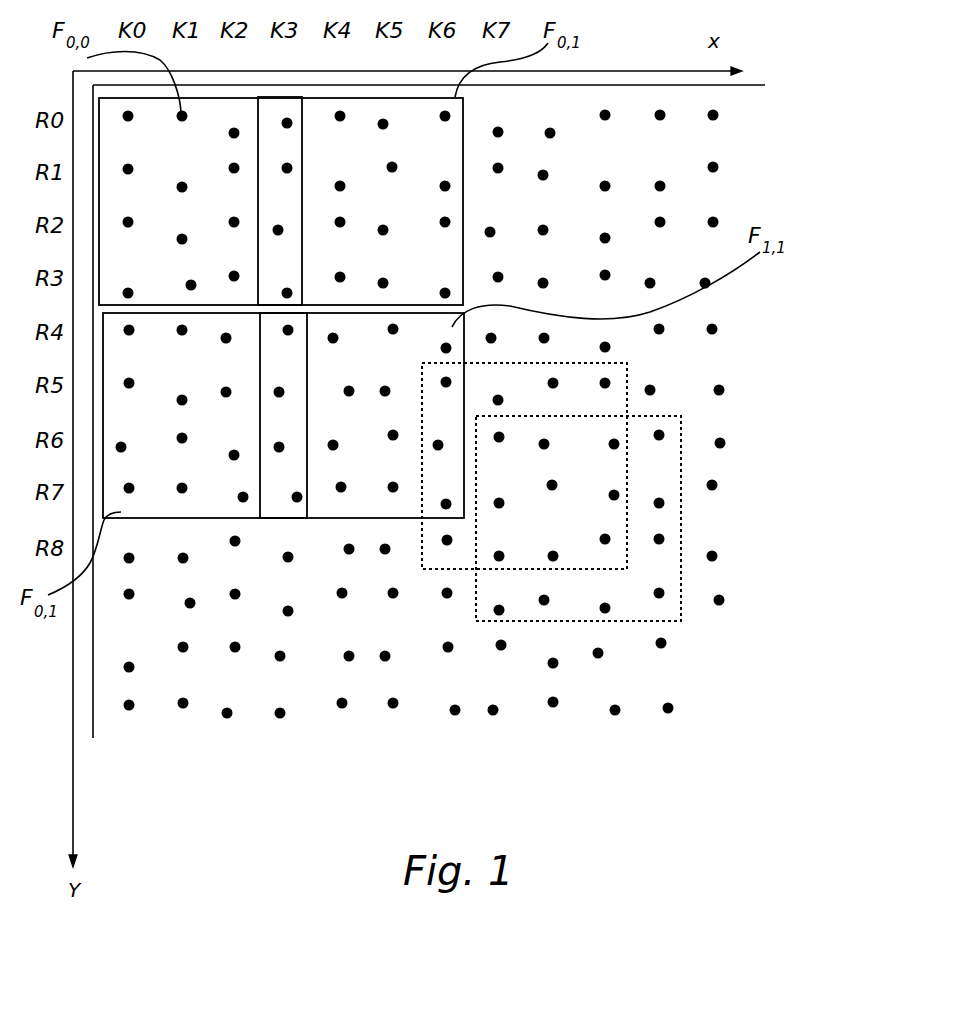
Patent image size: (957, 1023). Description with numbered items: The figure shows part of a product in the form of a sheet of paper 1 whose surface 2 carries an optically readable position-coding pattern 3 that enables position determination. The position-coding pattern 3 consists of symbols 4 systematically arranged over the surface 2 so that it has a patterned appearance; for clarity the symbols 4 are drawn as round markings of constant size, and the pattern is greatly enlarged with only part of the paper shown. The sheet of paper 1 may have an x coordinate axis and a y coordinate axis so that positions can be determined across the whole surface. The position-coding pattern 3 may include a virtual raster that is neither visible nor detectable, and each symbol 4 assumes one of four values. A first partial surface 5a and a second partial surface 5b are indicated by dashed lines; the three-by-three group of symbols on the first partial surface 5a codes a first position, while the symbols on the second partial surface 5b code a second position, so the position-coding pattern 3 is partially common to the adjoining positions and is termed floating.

The sheet of paper 1 is at (766, 76).
The surface 2 is at (404, 782).
The position-coding pattern 3 is at (282, 727).
The symbols 4 is at (553, 702).
The first partial surface 5a is at (615, 377).
The second partial surface 5b is at (672, 452).